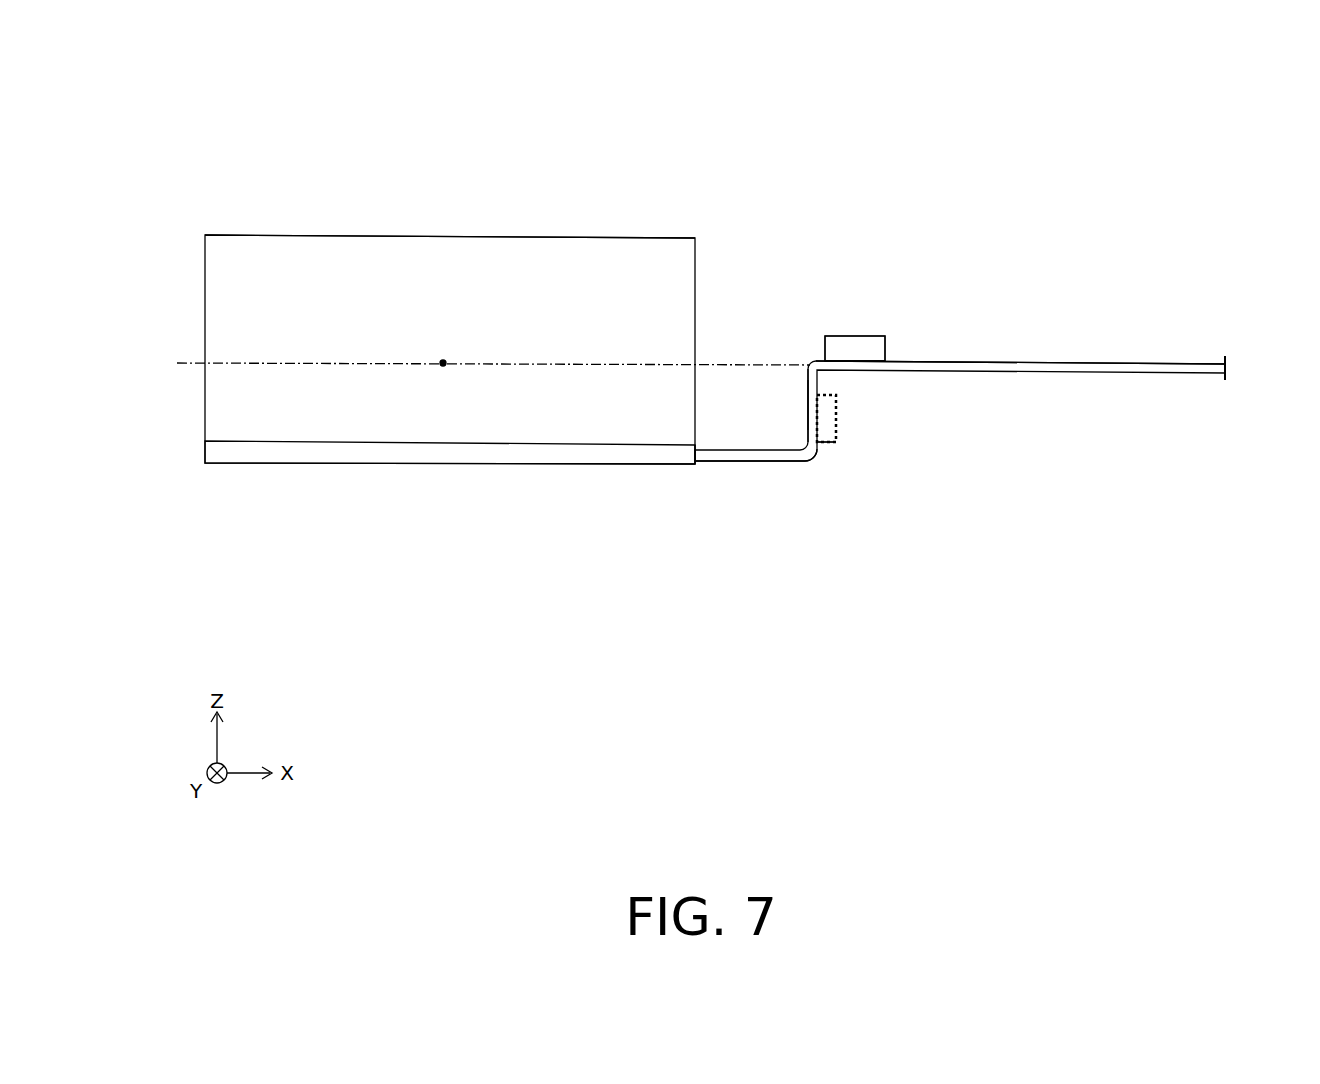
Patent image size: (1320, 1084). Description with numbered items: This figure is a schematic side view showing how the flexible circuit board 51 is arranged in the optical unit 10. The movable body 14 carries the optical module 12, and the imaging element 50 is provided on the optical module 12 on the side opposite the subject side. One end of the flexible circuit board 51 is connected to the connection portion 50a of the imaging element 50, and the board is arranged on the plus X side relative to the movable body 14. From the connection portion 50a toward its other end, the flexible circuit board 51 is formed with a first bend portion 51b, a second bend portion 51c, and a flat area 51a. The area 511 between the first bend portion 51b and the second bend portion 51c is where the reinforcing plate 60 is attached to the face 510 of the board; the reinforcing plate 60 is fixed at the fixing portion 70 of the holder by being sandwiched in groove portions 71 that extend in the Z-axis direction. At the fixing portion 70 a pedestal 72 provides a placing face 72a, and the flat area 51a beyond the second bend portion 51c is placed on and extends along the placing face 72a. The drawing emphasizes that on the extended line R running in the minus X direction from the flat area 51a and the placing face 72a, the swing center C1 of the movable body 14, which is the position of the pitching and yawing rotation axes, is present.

The optical unit 10 is at (999, 146).
The optical module 12 is at (620, 238).
The movable body 14 is at (340, 237).
The imaging element 50 is at (580, 452).
The connection portion 50a is at (696, 464).
The flexible circuit board 51 is at (1118, 352).
The flat area 51a is at (1012, 361).
The first bend portion 51b is at (820, 463).
The second bend portion 51c is at (803, 352).
The face 510 is at (822, 382).
The area 511 is at (803, 403).
The reinforcing plate 60 is at (800, 464).
The fixing portion 70 is at (905, 312).
The groove portion 71 is at (838, 449).
The pedestal 72 is at (856, 336).
The placing face 72a is at (868, 359).
The swing center C1 is at (443, 360).
The extended line R is at (196, 360).